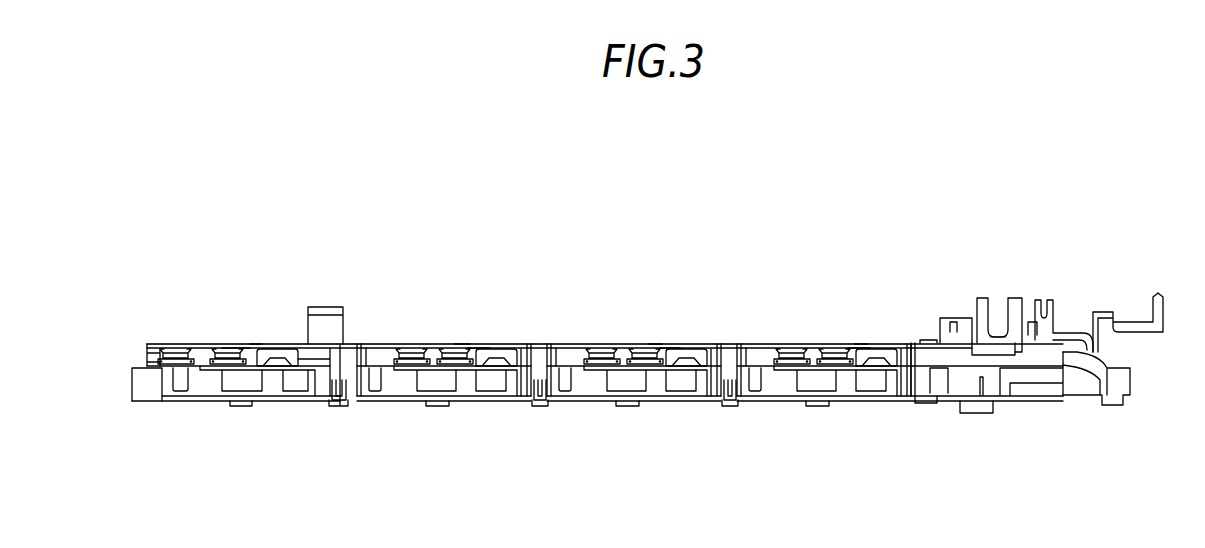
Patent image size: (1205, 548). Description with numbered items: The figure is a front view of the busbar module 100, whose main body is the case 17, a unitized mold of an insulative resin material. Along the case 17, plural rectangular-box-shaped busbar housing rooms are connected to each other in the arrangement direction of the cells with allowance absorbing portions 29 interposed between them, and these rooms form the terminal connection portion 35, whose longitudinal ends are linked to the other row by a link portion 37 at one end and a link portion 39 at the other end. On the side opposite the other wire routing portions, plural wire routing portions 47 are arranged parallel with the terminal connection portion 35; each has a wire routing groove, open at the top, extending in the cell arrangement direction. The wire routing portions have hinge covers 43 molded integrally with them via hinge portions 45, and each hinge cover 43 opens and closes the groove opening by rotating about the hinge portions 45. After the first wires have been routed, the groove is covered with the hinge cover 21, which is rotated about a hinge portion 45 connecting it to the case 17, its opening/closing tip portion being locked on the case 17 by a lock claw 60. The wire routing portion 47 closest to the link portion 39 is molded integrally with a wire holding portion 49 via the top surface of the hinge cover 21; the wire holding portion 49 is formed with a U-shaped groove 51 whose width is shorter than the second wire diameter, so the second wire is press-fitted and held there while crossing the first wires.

The busbar module 100 is at (220, 275).
The case 17 is at (147, 340).
The hinge cover 21 is at (929, 341).
The allowance absorbing portion 29 is at (359, 398).
The terminal connection portion 35 is at (132, 390).
The link portion 37 is at (327, 306).
The link portion 39 is at (1131, 387).
The hinge cover 43 is at (232, 345).
The hinge portion 45 is at (224, 350).
The wire routing portion 47 is at (257, 341).
The wire holding portion 49 is at (1010, 297).
The U-shaped groove 51 is at (997, 330).
The lock claw 60 is at (276, 358).